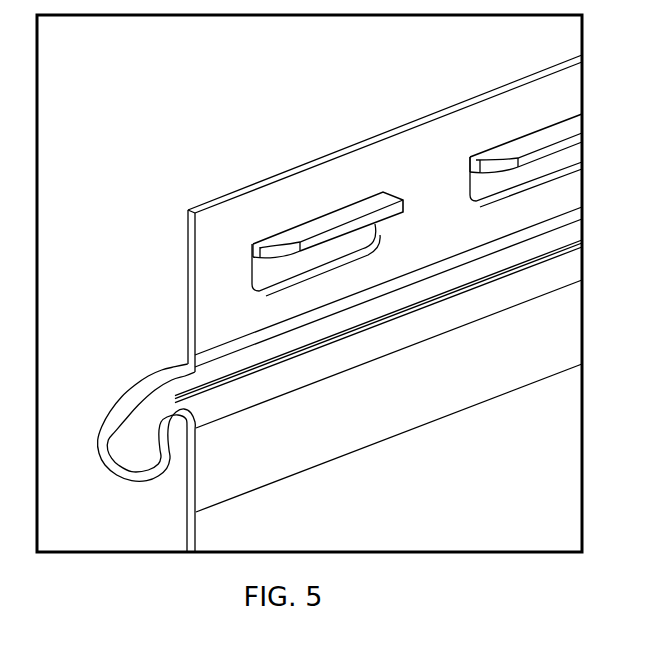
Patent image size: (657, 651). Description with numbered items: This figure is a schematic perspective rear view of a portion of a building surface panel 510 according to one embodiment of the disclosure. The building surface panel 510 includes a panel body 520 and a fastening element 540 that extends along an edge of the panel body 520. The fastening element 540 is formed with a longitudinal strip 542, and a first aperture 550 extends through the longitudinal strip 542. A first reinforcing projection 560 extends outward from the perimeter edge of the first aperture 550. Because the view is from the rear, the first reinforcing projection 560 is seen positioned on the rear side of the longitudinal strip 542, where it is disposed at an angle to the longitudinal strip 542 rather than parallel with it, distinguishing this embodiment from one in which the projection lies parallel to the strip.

The building surface panel 510 is at (155, 118).
The panel body 520 is at (446, 481).
The fastening element 540 is at (172, 302).
The longitudinal strip 542 is at (447, 167).
The first aperture 550 is at (352, 242).
The first reinforcing projection 560 is at (324, 222).